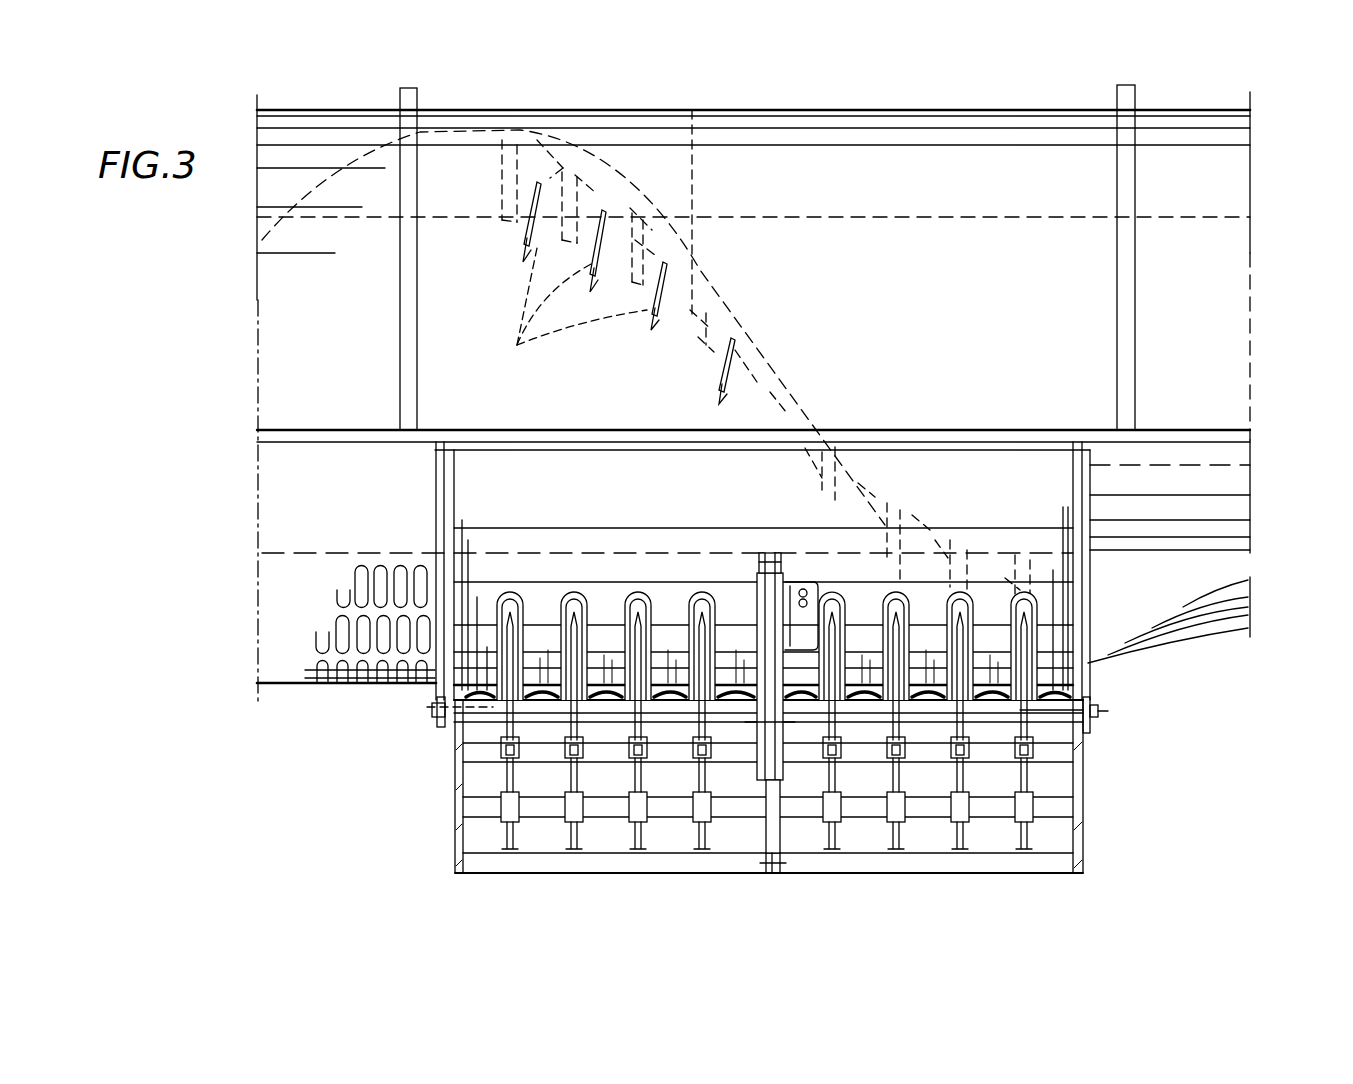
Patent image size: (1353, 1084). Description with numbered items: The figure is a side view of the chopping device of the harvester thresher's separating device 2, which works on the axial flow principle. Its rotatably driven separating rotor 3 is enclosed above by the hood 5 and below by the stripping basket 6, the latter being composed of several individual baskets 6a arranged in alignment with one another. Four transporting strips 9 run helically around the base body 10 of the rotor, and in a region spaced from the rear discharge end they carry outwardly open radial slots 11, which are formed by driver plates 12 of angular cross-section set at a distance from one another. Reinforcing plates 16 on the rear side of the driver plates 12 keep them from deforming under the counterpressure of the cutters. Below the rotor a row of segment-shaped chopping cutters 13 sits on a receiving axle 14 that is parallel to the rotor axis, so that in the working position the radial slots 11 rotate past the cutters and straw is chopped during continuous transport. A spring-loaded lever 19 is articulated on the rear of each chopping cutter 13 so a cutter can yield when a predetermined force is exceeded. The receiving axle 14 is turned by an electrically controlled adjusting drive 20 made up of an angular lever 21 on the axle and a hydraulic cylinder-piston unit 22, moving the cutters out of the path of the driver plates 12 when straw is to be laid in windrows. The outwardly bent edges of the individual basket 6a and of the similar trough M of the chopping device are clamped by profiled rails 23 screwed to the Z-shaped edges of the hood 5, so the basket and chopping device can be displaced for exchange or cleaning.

The separating device 2 is at (1046, 107).
The separating rotor 3 is at (1228, 508).
The hood 5 is at (818, 165).
The stripping basket 6 is at (337, 690).
The individual basket 6a is at (295, 640).
The transporting strips 9 is at (305, 193).
The base body 10 is at (1230, 482).
The radial slots 11 is at (628, 265).
The driver plates 12 is at (598, 190).
The chopping cutters 13 is at (633, 723).
The receiving axle 14 is at (480, 712).
The reinforcing plates 16 is at (510, 338).
The spring-loaded lever 19 is at (577, 780).
The adjusting drive 20 is at (752, 718).
The angular lever 21 is at (458, 828).
The hydraulic cylinder-piston unit 22 is at (770, 722).
The profiled rails 23 is at (310, 437).
The trough M is at (668, 610).